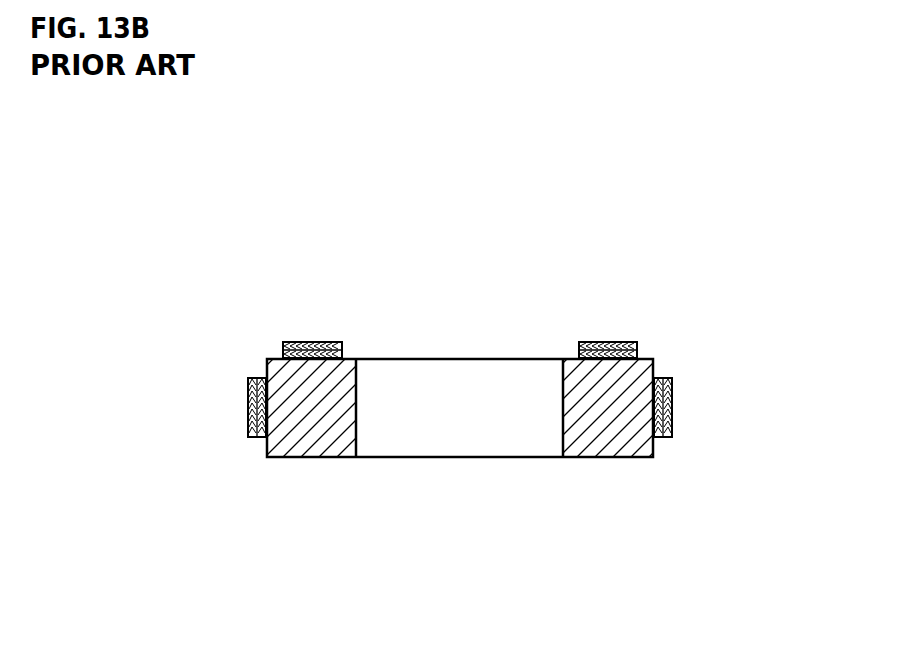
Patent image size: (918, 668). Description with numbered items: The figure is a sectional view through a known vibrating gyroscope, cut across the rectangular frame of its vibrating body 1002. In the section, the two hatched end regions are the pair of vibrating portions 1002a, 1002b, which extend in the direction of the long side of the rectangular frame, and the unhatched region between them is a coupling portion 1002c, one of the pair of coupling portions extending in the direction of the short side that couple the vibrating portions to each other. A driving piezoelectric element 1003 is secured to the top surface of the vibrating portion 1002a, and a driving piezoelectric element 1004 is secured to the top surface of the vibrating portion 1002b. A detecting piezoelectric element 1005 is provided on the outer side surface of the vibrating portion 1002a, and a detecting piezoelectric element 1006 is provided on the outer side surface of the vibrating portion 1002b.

The vibrating body 1002 is at (510, 462).
The vibrating portion 1002a is at (308, 437).
The vibrating portion 1002b is at (602, 438).
The coupling portion 1002c is at (448, 385).
The driving piezoelectric element 1003 is at (313, 341).
The driving piezoelectric element 1004 is at (615, 340).
The detecting piezoelectric element 1005 is at (247, 408).
The detecting piezoelectric element 1006 is at (672, 412).